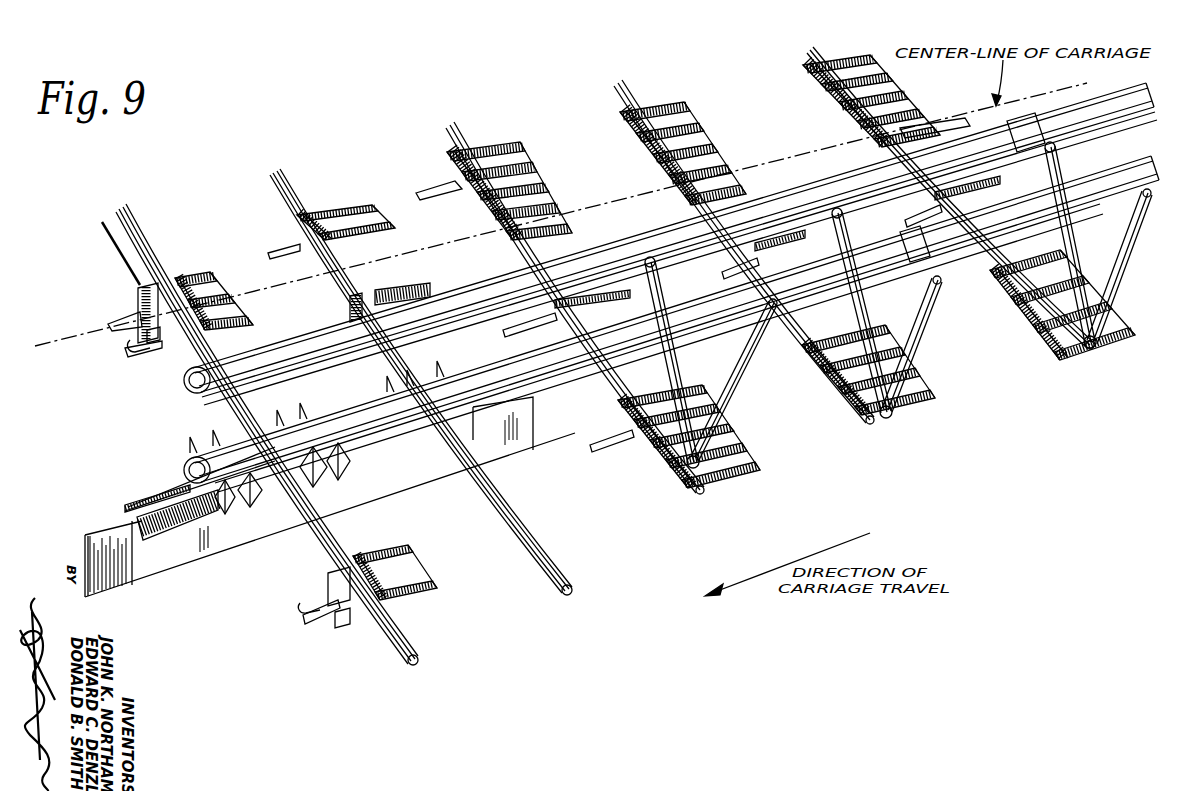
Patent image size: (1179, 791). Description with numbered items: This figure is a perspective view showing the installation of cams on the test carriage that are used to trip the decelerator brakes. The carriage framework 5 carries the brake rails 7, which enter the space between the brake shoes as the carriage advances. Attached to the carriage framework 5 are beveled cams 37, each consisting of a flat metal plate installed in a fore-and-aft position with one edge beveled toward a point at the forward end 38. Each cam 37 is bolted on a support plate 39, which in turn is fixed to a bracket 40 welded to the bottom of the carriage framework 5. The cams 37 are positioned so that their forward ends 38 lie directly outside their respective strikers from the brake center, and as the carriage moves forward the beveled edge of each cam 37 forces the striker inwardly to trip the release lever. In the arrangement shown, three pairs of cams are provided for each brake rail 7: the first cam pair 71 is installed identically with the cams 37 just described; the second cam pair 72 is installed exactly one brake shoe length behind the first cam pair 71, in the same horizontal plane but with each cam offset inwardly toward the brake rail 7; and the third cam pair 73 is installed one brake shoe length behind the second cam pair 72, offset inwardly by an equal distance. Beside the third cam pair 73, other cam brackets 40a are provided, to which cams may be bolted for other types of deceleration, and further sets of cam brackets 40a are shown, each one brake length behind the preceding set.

The carriage framework 5 is at (215, 400).
The brake rail 7 is at (160, 564).
The cam 37 is at (125, 310).
The forward end 38 is at (137, 350).
The support plate 39 is at (148, 333).
The bracket 40 is at (178, 350).
The cam bracket 40a is at (1055, 350).
The cam pair No. (1) 71 is at (368, 466).
The cam pair No. (2) 72 is at (345, 372).
The cam pair No. (3) 73 is at (567, 436).